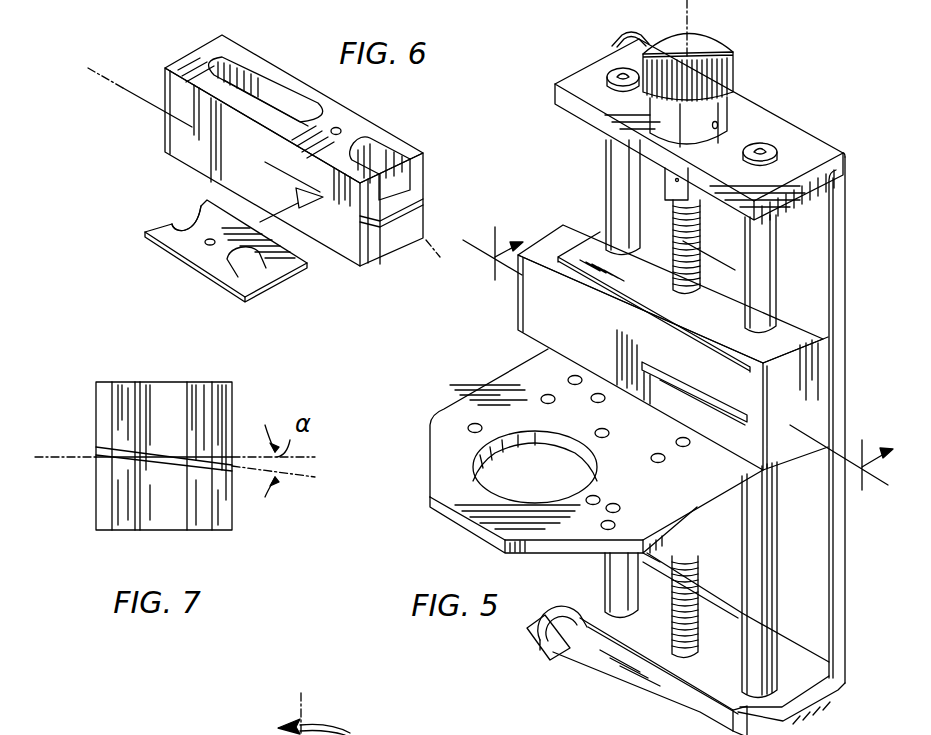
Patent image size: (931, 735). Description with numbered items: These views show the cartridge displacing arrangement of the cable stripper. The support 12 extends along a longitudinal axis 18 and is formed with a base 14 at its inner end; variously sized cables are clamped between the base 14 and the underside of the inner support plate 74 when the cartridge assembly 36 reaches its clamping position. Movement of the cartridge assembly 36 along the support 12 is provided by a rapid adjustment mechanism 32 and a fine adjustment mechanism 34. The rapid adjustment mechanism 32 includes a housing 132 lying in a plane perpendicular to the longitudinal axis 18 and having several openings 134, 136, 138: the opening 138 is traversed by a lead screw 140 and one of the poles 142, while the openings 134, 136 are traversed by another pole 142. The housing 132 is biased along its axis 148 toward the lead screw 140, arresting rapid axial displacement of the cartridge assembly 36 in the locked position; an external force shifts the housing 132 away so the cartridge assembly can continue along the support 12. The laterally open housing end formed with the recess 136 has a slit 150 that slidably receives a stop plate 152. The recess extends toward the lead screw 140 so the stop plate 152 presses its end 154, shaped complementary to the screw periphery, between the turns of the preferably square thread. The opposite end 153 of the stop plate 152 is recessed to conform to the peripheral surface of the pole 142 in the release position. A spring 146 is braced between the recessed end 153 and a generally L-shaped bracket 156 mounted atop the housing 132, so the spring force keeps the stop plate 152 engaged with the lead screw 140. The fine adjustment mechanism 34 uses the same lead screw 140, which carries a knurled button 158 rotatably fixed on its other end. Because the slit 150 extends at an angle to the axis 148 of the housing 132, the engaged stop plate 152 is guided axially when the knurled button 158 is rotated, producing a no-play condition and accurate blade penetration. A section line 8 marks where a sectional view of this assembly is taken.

In FIG. 5, the support 12 is at (840, 235).
In FIG. 5, the base 14 is at (620, 660).
In FIG. 5, the longitudinal axis 18 is at (716, 3).
In FIG. 5, the rapid adjustment mechanism 32 is at (517, 338).
In FIG. 5, the fine adjustment mechanism 34 is at (572, 145).
In FIG. 5, the cartridge assembly 36 is at (458, 532).
In FIG. 5, the inner support plate 74 is at (707, 507).
In FIG. 5, the housing 132 is at (707, 378).
In FIG. 6, the opening 134 is at (393, 152).
In FIG. 6, the recess 136 is at (388, 224).
In FIG. 6, the opening 138 is at (273, 95).
In FIG. 5, the lead screw 140 is at (735, 270).
In FIG. 5, the pole 142 is at (622, 180).
In FIG. 5, the spring 146 is at (650, 513).
In FIG. 6, the axis 148 is at (124, 64).
In FIG. 7, the axis 148 is at (64, 462).
In FIG. 5, the axis 148 is at (673, 347).
In FIG. 7, the slit 150 is at (168, 458).
In FIG. 5, the slit 150 is at (637, 372).
In FIG. 6, the stop plate 152 is at (163, 238).
In FIG. 6, the recessed end 153 is at (270, 264).
In FIG. 6, the end of stop plate 154 is at (186, 228).
In FIG. 5, the L-shaped bracket 156 is at (803, 322).
In FIG. 5, the knurled button 158 is at (735, 50).
In FIG. 5, the section line 8- 8 is at (681, 354).